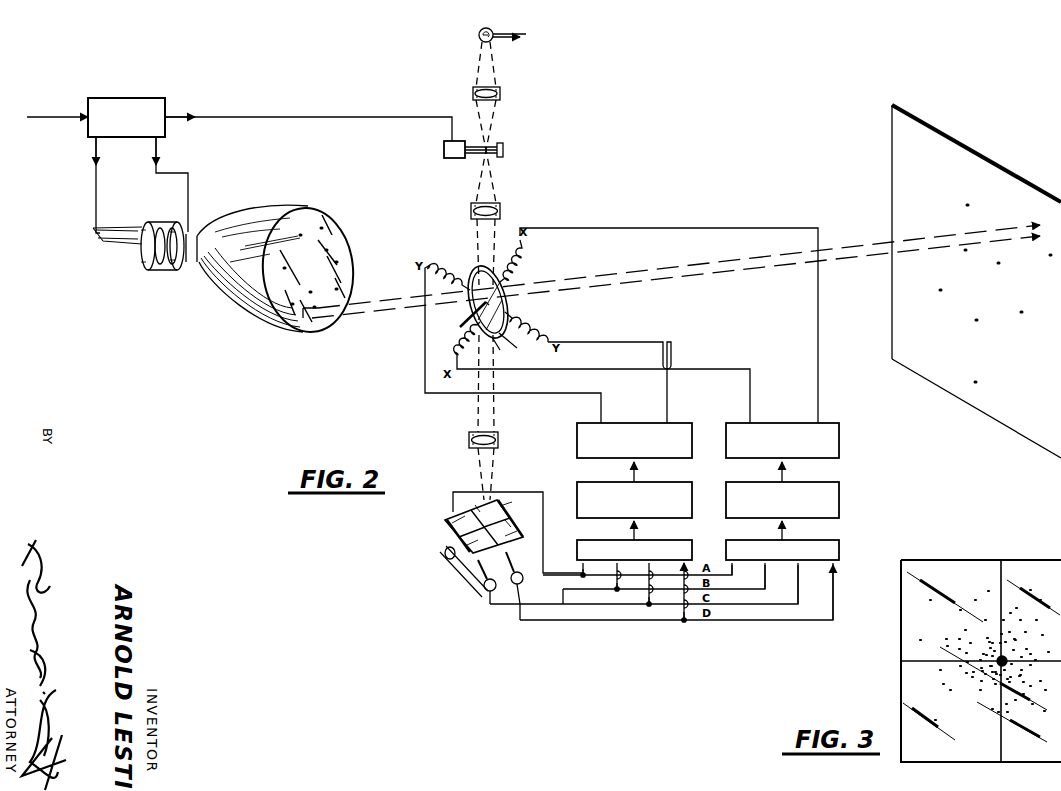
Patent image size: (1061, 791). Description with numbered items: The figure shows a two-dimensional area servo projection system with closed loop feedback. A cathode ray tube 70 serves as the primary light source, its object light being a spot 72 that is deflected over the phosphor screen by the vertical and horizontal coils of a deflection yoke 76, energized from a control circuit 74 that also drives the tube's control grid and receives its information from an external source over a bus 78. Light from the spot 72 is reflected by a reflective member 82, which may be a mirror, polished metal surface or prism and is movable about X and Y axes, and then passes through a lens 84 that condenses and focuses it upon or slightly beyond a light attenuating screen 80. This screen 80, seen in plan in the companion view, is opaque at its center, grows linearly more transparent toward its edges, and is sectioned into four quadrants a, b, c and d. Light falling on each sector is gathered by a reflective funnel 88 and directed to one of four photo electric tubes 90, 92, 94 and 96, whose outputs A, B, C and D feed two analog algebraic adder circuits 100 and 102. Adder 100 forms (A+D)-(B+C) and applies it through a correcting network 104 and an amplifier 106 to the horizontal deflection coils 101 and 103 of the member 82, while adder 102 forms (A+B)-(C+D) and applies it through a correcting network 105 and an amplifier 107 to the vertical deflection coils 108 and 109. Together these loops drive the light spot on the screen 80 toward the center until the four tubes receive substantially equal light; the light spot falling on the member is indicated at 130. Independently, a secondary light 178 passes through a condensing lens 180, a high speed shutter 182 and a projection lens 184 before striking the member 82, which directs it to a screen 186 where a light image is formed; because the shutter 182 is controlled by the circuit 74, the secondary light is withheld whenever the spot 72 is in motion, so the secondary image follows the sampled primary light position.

In FIG. 2, the cathode ray tube 70 is at (276, 207).
In FIG. 2, the spot 72 is at (303, 318).
In FIG. 2, the control circuit 74 is at (133, 128).
In FIG. 2, the deflection yoke 76 is at (163, 222).
In FIG. 2, the bus 78 is at (67, 118).
In FIG. 2, the light attenuating screen 80 is at (446, 522).
In FIG. 3, the light attenuating screen 80 is at (1040, 560).
In FIG. 2, the reflective member 82 is at (504, 289).
In FIG. 2, the lens 84 is at (499, 440).
In FIG. 2, the reflective funnel 88 is at (449, 536).
In FIG. 2, the photo electric tube 90 is at (523, 582).
In FIG. 2, the photo electric tube 92 is at (483, 492).
In FIG. 2, the photo electric tube 94 is at (448, 558).
In FIG. 2, the photo electric tube 96 is at (483, 587).
In FIG. 2, the analog algebraic adder circuit 100 is at (660, 540).
In FIG. 2, the horizontal deflection coil 101 is at (542, 330).
In FIG. 2, the analog algebraic adder circuit 102 is at (820, 540).
In FIG. 2, the horizontal deflection coil 103 is at (436, 263).
In FIG. 2, the correcting network 104 is at (670, 483).
In FIG. 2, the correcting network 105 is at (832, 486).
In FIG. 2, the amplifier 106 is at (676, 424).
In FIG. 2, the amplifier 107 is at (832, 424).
In FIG. 2, the vertical deflection coil 108 is at (518, 254).
In FIG. 2, the vertical deflection coil 109 is at (452, 350).
In FIG. 2, the light spot on mirror 130 is at (496, 306).
In FIG. 2, the secondary light 178 is at (491, 29).
In FIG. 2, the condensing lens 180 is at (501, 94).
In FIG. 2, the high speed shutter 182 is at (444, 151).
In FIG. 2, the projection lens 184 is at (501, 211).
In FIG. 2, the screen 186 is at (1004, 182).